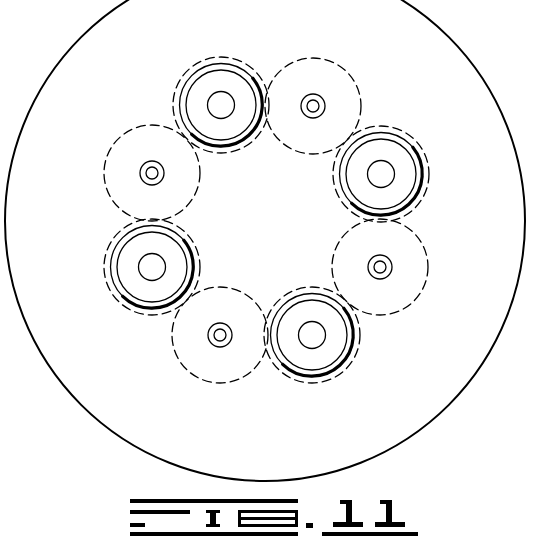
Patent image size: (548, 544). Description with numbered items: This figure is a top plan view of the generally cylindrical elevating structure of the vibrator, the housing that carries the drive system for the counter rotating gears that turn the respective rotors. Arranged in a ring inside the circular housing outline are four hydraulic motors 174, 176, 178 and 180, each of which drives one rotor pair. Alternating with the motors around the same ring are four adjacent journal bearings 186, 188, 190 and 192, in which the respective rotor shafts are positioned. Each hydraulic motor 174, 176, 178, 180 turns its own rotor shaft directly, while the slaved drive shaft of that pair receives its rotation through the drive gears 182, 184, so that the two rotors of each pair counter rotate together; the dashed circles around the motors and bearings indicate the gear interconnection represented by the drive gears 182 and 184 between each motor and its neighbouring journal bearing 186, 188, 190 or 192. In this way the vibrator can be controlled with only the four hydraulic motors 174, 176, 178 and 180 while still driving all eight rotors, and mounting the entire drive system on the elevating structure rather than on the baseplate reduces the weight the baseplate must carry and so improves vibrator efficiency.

The hydraulic motor 174 is at (396, 161).
The hydraulic motor 176 is at (324, 353).
The hydraulic motor 178 is at (217, 83).
The hydraulic motor 180 is at (174, 258).
The drive gear 182 is at (403, 130).
The drive gear 184 is at (106, 159).
The journal bearing 186 is at (393, 266).
The journal bearing 188 is at (218, 348).
The journal bearing 190 is at (316, 93).
The journal bearing 192 is at (165, 175).